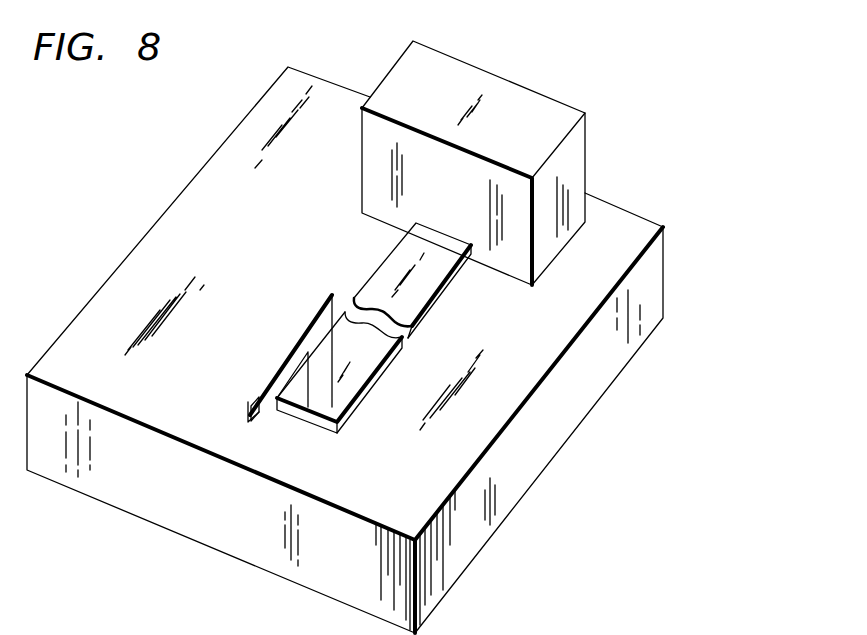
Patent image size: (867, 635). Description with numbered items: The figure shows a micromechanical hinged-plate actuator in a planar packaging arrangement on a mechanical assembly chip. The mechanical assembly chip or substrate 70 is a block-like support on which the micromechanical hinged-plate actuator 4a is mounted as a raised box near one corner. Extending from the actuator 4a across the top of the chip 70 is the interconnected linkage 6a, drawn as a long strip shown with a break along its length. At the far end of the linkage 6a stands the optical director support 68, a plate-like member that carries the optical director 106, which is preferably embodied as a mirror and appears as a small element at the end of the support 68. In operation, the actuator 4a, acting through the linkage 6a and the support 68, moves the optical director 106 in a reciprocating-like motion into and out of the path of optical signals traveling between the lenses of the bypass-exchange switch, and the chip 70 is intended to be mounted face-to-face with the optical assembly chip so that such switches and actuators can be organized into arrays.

The mechanical assembly chip 70 is at (145, 277).
The micromechanical hinged-plate actuator 4a is at (532, 121).
The interconnected linkage 6a is at (410, 348).
The optical director support 68 is at (317, 327).
The optical director 106 is at (262, 387).